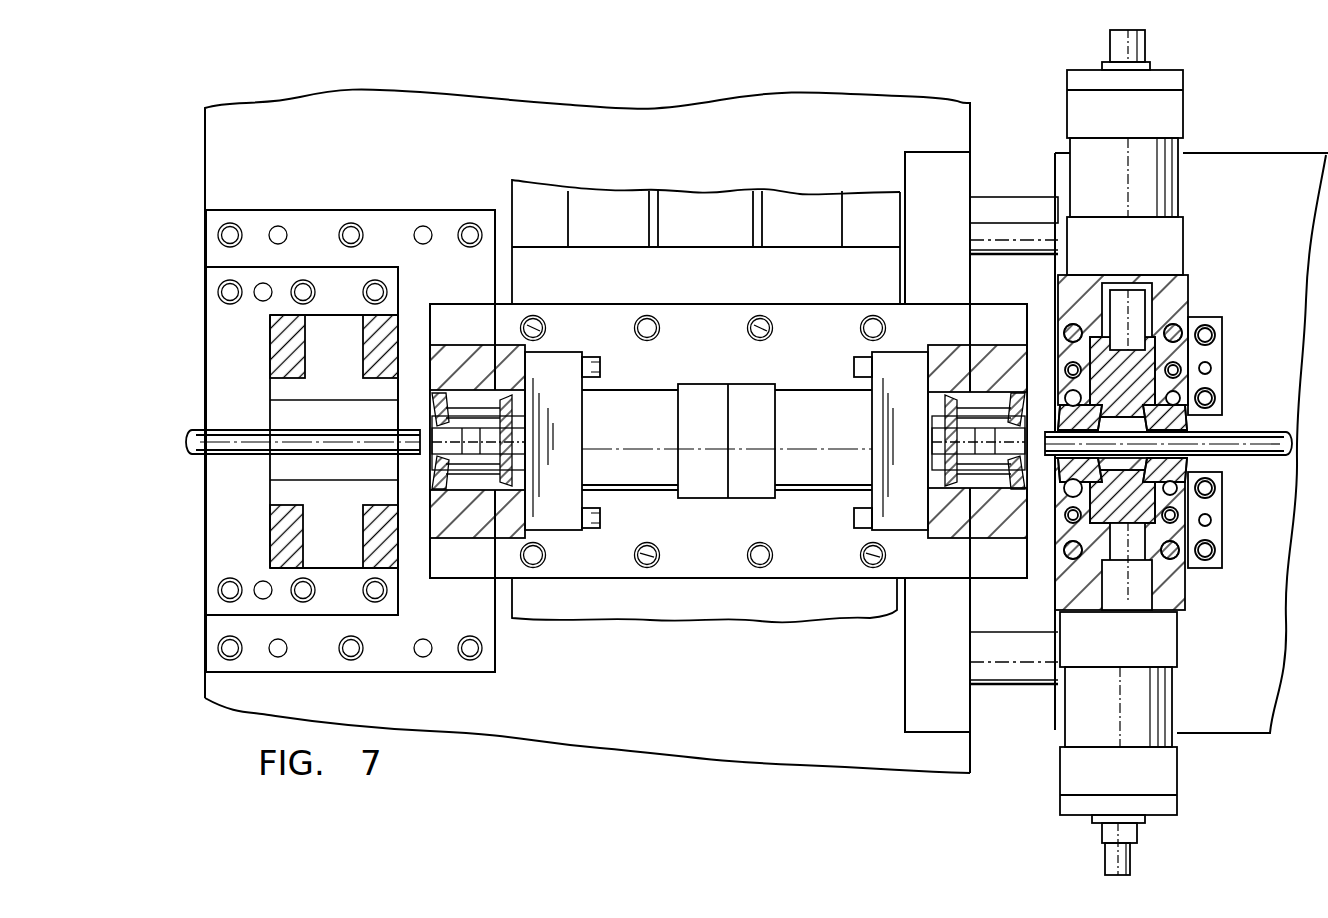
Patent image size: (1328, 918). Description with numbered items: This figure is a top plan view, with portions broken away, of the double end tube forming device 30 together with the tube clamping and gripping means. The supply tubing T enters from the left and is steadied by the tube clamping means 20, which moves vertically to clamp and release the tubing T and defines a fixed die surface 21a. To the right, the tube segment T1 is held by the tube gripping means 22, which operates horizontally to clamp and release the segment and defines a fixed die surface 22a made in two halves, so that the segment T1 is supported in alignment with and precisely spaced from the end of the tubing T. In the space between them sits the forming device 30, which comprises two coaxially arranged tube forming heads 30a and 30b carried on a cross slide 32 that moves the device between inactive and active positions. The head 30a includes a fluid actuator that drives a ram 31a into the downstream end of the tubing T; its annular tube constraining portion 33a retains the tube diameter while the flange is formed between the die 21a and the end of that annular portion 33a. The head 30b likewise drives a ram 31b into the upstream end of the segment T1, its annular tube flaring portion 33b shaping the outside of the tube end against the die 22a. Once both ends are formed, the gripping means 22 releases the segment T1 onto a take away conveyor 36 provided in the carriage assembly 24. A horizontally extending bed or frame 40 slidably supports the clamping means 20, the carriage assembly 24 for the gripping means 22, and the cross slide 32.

The tube clamping means 20 is at (268, 349).
The fixed die surface 21a is at (398, 393).
The tube gripping means 22 is at (1190, 292).
The fixed die surface 22a is at (1042, 472).
The carriage assembly 24 is at (1231, 694).
The double end tube forming device 30 is at (697, 507).
The tube forming head 30a is at (492, 348).
The tube forming head 30b is at (980, 348).
The ram 31a is at (440, 428).
The ram 31b is at (1022, 430).
The cross slide 32 is at (676, 210).
The annular tube constraining portion 33a is at (432, 452).
The annular tube flaring portion 33b is at (965, 470).
The take away conveyor 36 is at (1246, 457).
The bed or frame 40 is at (782, 694).
The tubing T is at (248, 428).
The tube segment T1 is at (1237, 432).